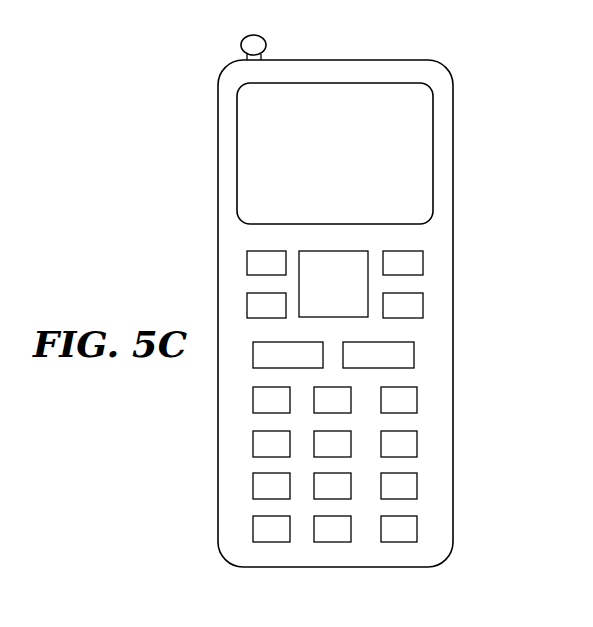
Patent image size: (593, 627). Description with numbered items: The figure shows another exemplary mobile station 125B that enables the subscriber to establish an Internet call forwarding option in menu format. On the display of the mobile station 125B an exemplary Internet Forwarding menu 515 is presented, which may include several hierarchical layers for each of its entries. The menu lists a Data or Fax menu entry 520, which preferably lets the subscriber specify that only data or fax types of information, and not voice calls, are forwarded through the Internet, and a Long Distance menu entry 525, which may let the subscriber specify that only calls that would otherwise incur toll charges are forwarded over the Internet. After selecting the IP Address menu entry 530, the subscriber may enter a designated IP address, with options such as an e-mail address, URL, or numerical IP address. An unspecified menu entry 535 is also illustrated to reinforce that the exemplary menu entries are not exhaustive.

The mobile station 125B is at (455, 85).
The Internet Forwarding menu 515 is at (210, 82).
The Data or Fax menu entry 520 is at (416, 128).
The Long Distance menu entry 525 is at (416, 158).
The IP Address menu entry 530 is at (400, 182).
The unspecified menu entry 535 is at (400, 212).